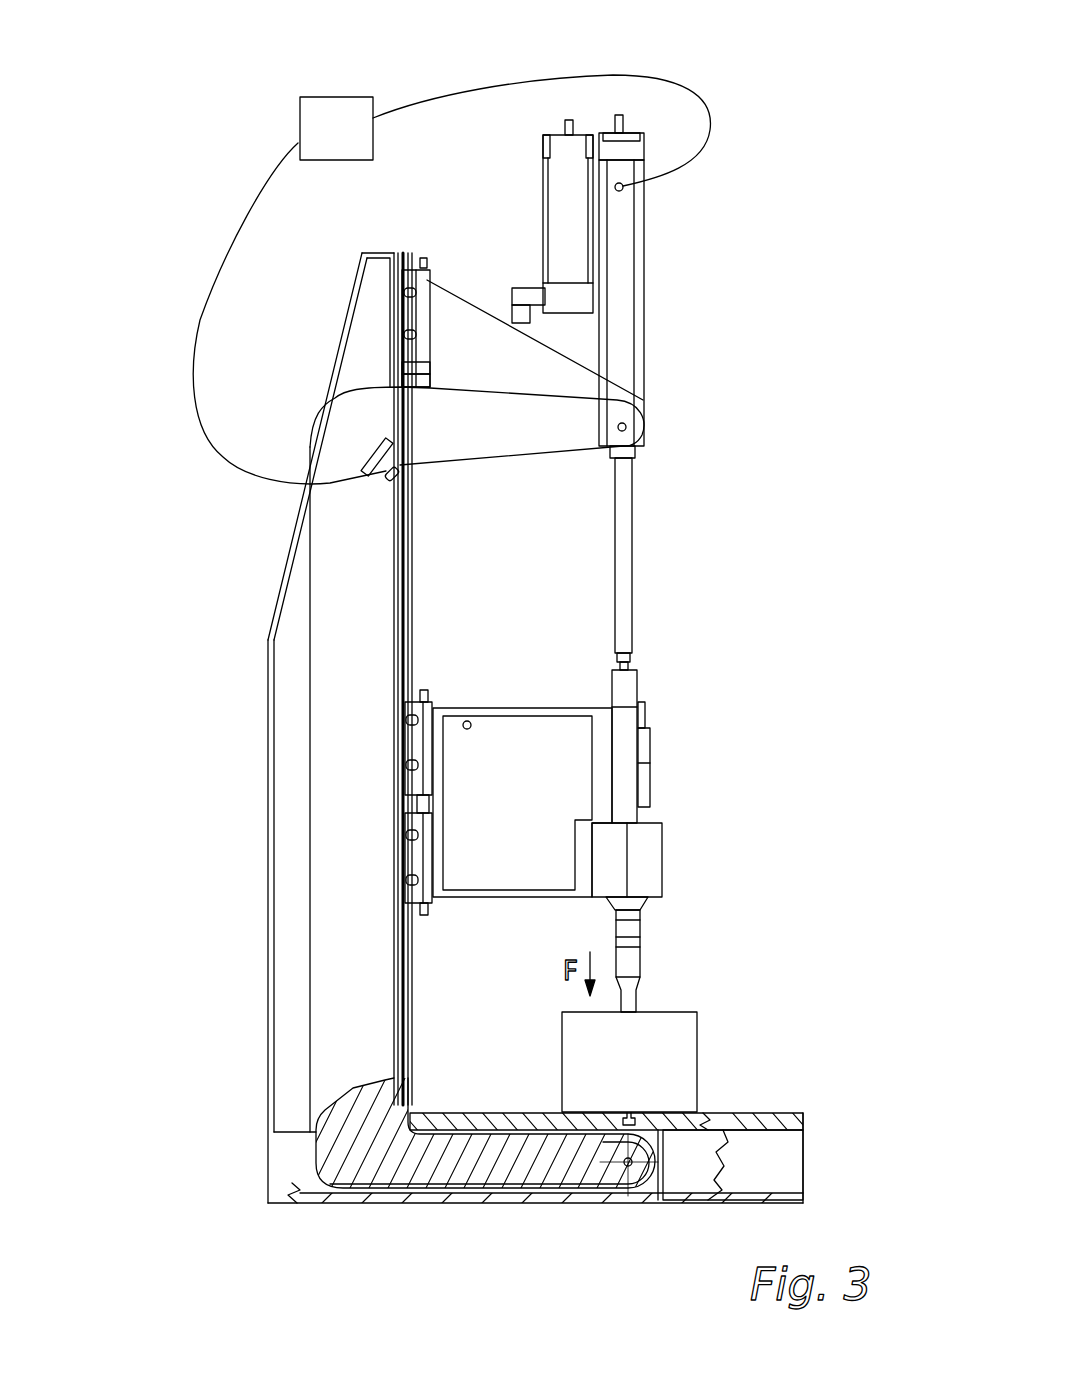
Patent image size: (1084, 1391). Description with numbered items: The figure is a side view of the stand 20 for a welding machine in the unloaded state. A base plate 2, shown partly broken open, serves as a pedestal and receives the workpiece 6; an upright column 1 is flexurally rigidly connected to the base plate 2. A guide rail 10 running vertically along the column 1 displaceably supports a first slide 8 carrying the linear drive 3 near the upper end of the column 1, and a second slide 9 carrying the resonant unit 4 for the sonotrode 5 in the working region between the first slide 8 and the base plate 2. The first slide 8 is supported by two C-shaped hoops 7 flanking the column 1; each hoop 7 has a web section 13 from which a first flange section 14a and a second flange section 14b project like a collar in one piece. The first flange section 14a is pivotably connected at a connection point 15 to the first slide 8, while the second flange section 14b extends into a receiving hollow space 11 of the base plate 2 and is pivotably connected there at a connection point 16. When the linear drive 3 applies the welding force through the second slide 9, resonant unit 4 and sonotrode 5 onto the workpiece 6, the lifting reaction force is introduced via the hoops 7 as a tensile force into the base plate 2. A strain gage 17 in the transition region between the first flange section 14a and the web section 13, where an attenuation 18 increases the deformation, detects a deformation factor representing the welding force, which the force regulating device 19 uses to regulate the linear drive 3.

The column 1 is at (283, 968).
The base plate 2 is at (283, 1165).
The linear drive 3 is at (628, 300).
The resonant unit 4 is at (647, 787).
The sonotrode 5 is at (633, 962).
The workpiece 6 is at (682, 1050).
The C-shaped hoop 7 is at (330, 800).
The first slide 8 is at (480, 330).
The second slide 9 is at (523, 747).
The guide rail 10 is at (428, 593).
The receiving hollow space 11 is at (317, 1183).
The web section 13 is at (322, 692).
The first flange section 14a is at (473, 442).
The second flange section 14b is at (457, 1170).
The connection point 15 is at (626, 427).
The connection point 16 is at (632, 1165).
The strain gage 17 is at (373, 447).
The attenuation 18 is at (395, 478).
The force regulating device 19 is at (337, 97).
The stand 20 is at (712, 615).